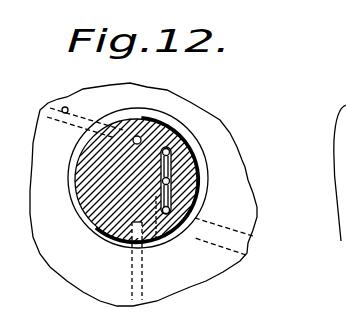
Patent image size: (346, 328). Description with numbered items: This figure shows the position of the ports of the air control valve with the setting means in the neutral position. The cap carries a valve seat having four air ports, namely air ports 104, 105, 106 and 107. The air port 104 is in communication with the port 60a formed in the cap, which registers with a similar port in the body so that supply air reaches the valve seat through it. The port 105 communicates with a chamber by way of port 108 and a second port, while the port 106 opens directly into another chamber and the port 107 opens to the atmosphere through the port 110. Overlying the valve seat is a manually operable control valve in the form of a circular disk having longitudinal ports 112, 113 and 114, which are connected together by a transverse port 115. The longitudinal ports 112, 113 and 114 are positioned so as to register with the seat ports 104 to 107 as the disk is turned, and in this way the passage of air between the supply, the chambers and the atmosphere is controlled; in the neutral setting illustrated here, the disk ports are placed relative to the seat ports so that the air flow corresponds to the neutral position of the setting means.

The air port 104 is at (118, 237).
The air port 105 is at (156, 242).
The air port 106 is at (172, 172).
The air port 107 is at (140, 137).
The port 108 is at (255, 236).
The port 110 is at (66, 107).
The longitudinal port 112 is at (168, 211).
The longitudinal port 113 is at (170, 181).
The longitudinal port 114 is at (176, 139).
The transverse port 115 is at (185, 157).
The port 60a is at (147, 297).